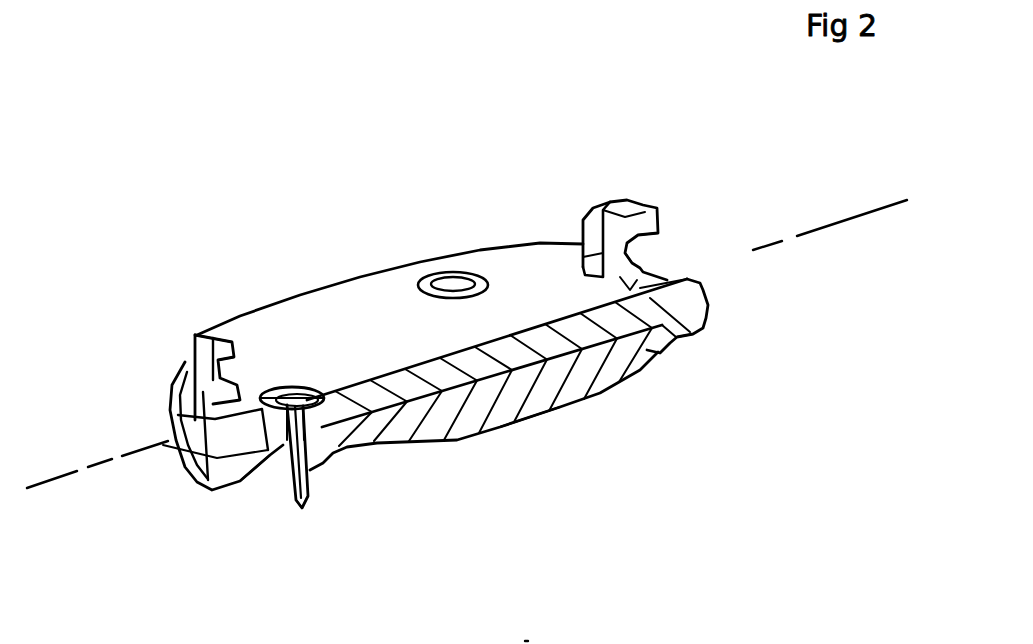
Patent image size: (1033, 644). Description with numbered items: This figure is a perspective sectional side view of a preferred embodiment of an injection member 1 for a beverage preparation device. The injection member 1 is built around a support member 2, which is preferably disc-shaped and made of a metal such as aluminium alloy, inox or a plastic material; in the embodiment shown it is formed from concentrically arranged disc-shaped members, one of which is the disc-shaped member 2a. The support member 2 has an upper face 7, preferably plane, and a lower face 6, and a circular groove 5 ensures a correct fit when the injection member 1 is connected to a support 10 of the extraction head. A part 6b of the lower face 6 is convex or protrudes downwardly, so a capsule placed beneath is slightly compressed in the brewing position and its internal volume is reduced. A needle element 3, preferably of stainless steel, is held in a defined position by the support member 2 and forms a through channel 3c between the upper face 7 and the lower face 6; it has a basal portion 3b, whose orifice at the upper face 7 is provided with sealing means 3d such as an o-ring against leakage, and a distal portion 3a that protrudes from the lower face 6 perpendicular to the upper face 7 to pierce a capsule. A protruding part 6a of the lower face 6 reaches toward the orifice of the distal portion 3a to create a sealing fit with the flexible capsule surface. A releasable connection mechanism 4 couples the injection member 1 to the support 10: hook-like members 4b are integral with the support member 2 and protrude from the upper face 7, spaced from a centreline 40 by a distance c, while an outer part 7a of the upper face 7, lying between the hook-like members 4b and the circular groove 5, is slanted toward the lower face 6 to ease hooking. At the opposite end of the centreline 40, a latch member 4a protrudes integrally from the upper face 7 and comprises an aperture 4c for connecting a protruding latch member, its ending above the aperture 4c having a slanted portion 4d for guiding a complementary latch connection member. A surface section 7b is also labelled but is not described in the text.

The injection member 1 is at (240, 282).
The support member 2 is at (352, 295).
The disc-shaped member 2a is at (685, 300).
The needle element 3 is at (297, 483).
The distal portion 3a is at (300, 490).
The basal portion 3b is at (283, 440).
The through channel 3c is at (303, 433).
The sealing means 3d is at (320, 405).
The releasable connection mechanism 4 is at (662, 202).
The latch member 4a is at (212, 345).
The hook-like member 4b is at (640, 210).
The aperture 4c is at (190, 357).
The slanted portion 4d is at (195, 333).
The circular groove 5 is at (195, 462).
The lower face 6 is at (687, 335).
The protruding part of the lower face 6a is at (270, 477).
The convex part of the lower face 6b is at (517, 418).
The upper face 7 is at (315, 335).
The outer part of the upper face 7a is at (668, 272).
The underside section 7b is at (640, 347).
The support 10 is at (544, 627).
The centreline 40 is at (48, 485).
The distance c is at (622, 270).